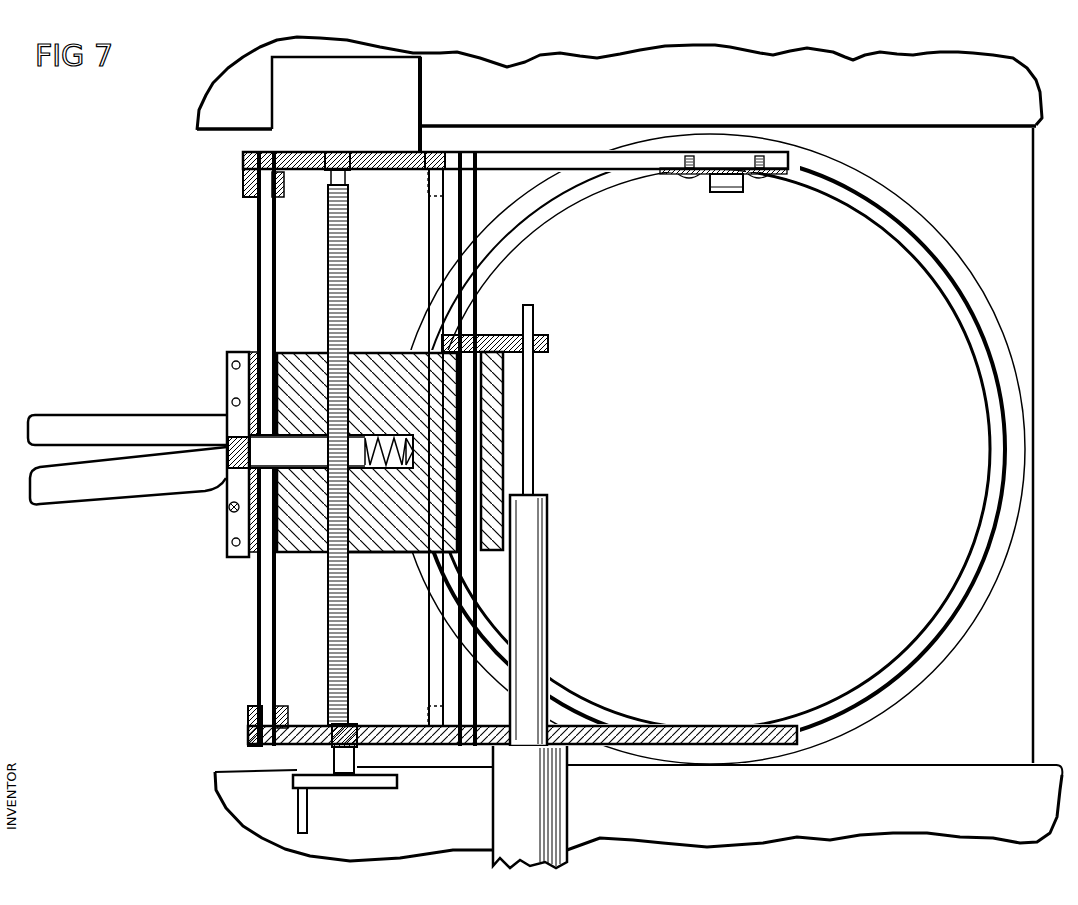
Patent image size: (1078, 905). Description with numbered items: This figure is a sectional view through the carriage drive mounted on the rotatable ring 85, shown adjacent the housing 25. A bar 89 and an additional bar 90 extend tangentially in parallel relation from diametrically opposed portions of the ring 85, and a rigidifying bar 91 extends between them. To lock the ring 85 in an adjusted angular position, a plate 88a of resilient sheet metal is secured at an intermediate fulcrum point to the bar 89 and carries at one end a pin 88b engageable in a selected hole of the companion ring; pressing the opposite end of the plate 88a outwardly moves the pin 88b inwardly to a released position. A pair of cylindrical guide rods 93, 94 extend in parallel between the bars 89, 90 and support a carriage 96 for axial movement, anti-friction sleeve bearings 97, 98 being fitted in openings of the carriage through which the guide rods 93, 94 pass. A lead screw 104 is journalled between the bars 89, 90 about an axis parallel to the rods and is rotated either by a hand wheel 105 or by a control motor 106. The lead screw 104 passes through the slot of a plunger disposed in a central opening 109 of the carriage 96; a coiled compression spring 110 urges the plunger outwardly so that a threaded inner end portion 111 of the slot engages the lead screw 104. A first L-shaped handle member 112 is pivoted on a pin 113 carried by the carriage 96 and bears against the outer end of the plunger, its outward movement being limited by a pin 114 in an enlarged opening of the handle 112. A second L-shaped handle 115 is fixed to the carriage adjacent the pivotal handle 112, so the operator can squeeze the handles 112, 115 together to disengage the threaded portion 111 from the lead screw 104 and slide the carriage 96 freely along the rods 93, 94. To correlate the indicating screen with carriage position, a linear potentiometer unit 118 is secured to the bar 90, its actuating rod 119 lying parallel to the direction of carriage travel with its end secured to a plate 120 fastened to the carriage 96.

The housing 25 is at (1024, 82).
The ring 85 is at (932, 277).
The plate 88a is at (730, 193).
The pin 88b is at (708, 195).
The bar 89 is at (245, 160).
The additional bar 90 is at (248, 735).
The rigidifying bar 91 is at (432, 680).
The cylindrical guide rod 93 is at (257, 262).
The cylindrical guide rod 94 is at (468, 256).
The carriage 96 is at (370, 543).
The anti-friction sleeve bearing 97 is at (253, 352).
The anti-friction sleeve bearing 98 is at (480, 420).
The lead screw 104 is at (327, 203).
The hand wheel 105 is at (397, 780).
The control motor 106 is at (285, 113).
The central opening 109 is at (378, 437).
The coiled compression spring 110 is at (398, 434).
The threaded inner end portion 111 is at (327, 447).
The first L-shaped handle member 112 is at (88, 483).
The pin 113 is at (233, 541).
The pin 114 is at (228, 507).
The second L-shaped handle 115 is at (80, 425).
The linear potentiometer unit 118 is at (549, 588).
The actuating rod 119 is at (529, 467).
The plate 120 is at (506, 348).